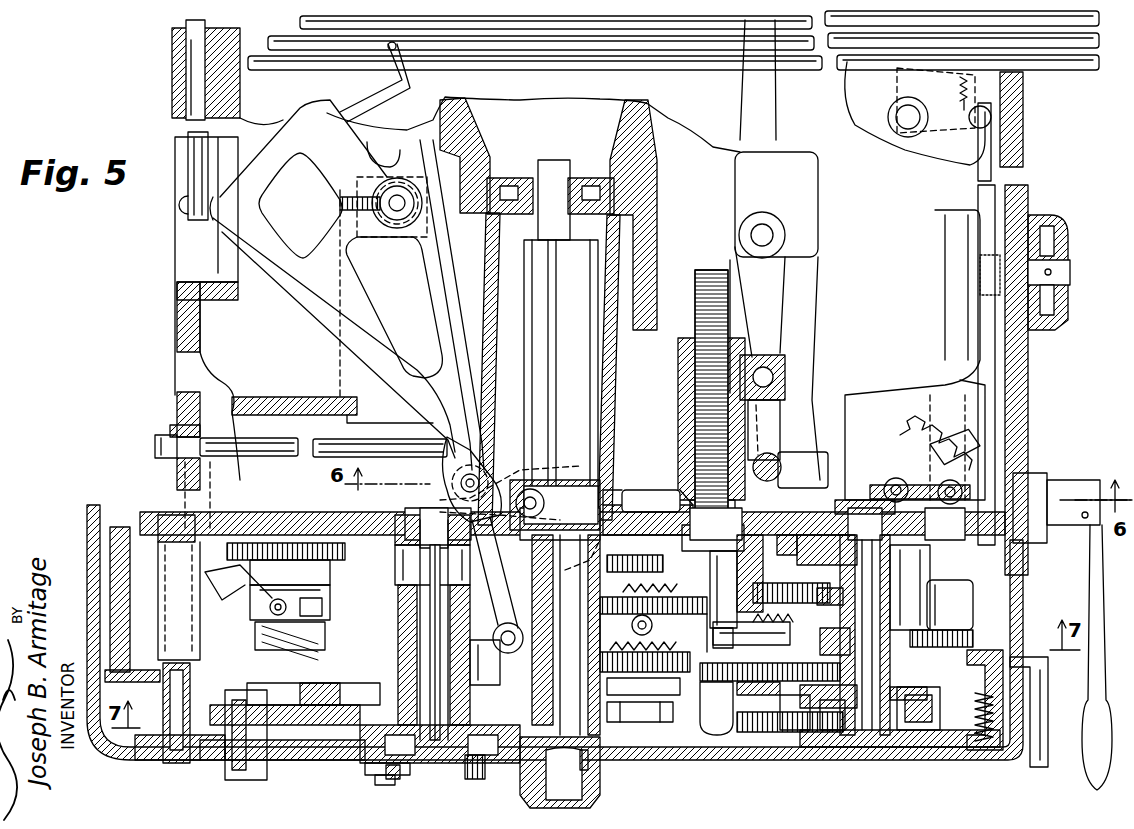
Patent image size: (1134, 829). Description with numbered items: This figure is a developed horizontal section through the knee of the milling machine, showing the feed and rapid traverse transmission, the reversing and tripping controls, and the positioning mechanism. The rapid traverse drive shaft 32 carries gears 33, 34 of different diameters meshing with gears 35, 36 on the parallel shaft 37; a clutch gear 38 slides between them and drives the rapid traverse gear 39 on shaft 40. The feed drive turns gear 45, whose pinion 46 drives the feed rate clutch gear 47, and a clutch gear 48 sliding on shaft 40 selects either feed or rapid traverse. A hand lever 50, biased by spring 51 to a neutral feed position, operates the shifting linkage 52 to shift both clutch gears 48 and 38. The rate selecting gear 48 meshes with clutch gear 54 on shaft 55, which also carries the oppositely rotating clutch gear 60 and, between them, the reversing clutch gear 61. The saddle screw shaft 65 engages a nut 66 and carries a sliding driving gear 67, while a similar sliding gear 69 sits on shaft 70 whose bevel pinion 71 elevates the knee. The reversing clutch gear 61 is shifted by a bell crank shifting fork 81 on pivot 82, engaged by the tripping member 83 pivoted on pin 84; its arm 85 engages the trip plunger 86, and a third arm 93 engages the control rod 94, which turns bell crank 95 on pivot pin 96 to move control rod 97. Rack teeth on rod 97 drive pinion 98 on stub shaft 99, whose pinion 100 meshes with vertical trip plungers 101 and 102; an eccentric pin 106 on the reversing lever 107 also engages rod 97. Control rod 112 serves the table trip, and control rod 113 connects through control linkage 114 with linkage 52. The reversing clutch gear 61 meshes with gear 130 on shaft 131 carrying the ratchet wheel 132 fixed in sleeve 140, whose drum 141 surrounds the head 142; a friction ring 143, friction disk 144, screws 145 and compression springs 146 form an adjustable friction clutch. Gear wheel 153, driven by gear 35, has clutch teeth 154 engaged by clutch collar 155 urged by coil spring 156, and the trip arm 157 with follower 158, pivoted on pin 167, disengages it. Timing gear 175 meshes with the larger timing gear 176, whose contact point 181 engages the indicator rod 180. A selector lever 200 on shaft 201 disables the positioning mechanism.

The rapid traverse drive shaft 32 is at (945, 291).
The gear 33 is at (960, 600).
The gear 34 is at (985, 648).
The low speed rapid traverse gear 35 is at (790, 477).
The high speed rapid traverse gear 36 is at (863, 612).
The shaft 37 is at (865, 512).
The clutch gear 38 is at (792, 618).
The rapid traverse gear 39 is at (800, 586).
The shaft 40 is at (820, 640).
The gear 45 is at (810, 747).
The pinion 46 is at (905, 748).
The feed rate clutch gear 47 is at (840, 747).
The clutch gear 48 is at (828, 668).
The hand lever 50 is at (1043, 712).
The spring 51 is at (988, 750).
The shifting linkage 52 is at (940, 590).
The clutch gear 54 is at (693, 660).
The shaft 55 is at (622, 742).
The clutch gear 60 is at (638, 535).
The reversing clutch gear 61 is at (660, 625).
The screw shaft 65 is at (712, 270).
The nut 66 is at (682, 372).
The driving gear 67 is at (713, 630).
The sliding gear 69 is at (532, 560).
The shaft 70 is at (551, 343).
The bevel pinion 71 is at (500, 176).
The bell crank shifting fork 81 is at (565, 658).
The pivot 82 is at (505, 648).
The tripping member 83 is at (436, 296).
The pin 84 is at (397, 229).
The arm 85 is at (240, 207).
The trip plunger 86 is at (192, 172).
The arm 93 is at (368, 92).
The control rod 94 is at (290, 37).
The bell crank 95 is at (905, 85).
The pivot pin 96 is at (905, 126).
The control rod 97 is at (975, 171).
The pinion 98 is at (982, 262).
The stub shaft 99 is at (1070, 276).
The pinion 100 is at (1062, 250).
The trip plunger 101 is at (1040, 226).
The trip plunger 102 is at (1042, 306).
The eccentric pin 106 is at (988, 490).
The reversing lever 107 is at (1092, 562).
The control rod 112 is at (1096, 22).
The control rod 113 is at (1080, 71).
The control linkage 114 is at (772, 301).
The gear 130 is at (400, 584).
The shaft 131 is at (400, 560).
The ratchet wheel 132 is at (417, 716).
The sleeve 140 is at (417, 688).
The drum 141 is at (365, 770).
The head 142 is at (442, 780).
The friction ring 143 is at (382, 782).
The friction disk 144 is at (424, 758).
The screws 145 is at (393, 780).
The compression springs 146 is at (480, 780).
The gear wheel 153 is at (348, 552).
The clutch teeth 154 is at (318, 590).
The clutch collar 155 is at (322, 607).
The coil spring 156 is at (325, 631).
The trip arm 157 is at (238, 577).
The follower 158 is at (280, 598).
The pin 167 is at (168, 515).
The timing gear 175 is at (400, 676).
The timing gear 176 is at (147, 680).
The indicator rod 180 is at (226, 776).
The contact point 181 is at (228, 695).
The selector lever 200 is at (168, 434).
The shaft 201 is at (292, 456).